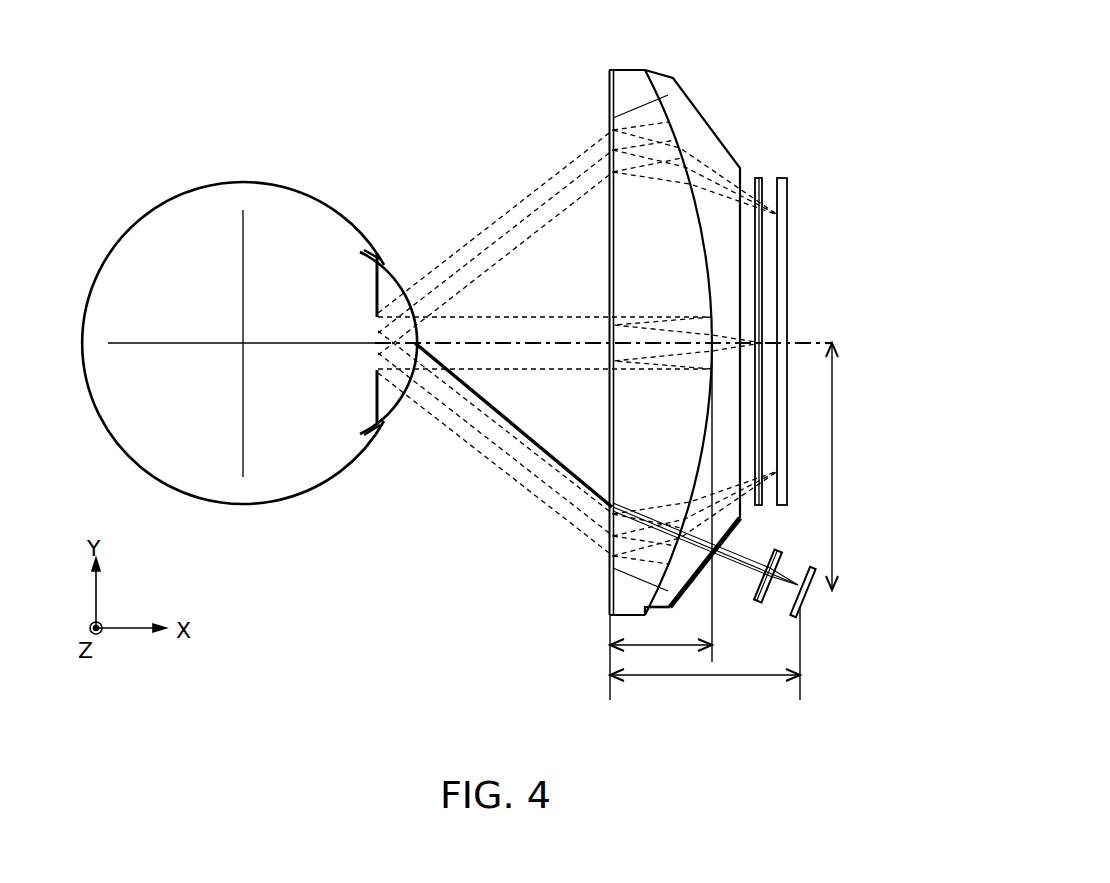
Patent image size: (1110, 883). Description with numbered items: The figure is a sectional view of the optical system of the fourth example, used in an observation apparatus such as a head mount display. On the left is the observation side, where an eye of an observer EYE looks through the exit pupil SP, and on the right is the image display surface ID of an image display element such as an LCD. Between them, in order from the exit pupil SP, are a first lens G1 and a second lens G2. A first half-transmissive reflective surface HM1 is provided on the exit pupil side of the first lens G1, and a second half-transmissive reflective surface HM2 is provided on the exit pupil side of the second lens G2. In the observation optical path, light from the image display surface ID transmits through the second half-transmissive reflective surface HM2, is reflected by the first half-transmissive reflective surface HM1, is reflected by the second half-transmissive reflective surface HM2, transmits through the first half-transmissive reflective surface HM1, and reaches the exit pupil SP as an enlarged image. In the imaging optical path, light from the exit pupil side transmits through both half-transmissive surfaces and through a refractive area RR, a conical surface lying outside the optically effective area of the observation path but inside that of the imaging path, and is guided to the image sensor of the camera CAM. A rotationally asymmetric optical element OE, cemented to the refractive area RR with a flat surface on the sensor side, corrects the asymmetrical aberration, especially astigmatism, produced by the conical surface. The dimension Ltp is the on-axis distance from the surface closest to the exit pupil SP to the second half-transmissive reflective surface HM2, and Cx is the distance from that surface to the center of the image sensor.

The eye of an observer EYE is at (325, 453).
The exit pupil SP is at (378, 253).
The first half-transmissive reflective surface HM1 is at (612, 130).
The first lens G1 is at (623, 82).
The second half-transmissive reflective surface HM2 is at (665, 85).
The second lens G2 is at (703, 142).
The image display surface ID is at (790, 283).
The optical element OE is at (732, 540).
The refractive area RR is at (692, 600).
The camera CAM is at (806, 602).
The distance from surface closest to exit pupil to second half-transmissive reflecti Ltp is at (661, 655).
The distance from surface closest to exit pupil to center of image sensor Cx is at (705, 693).